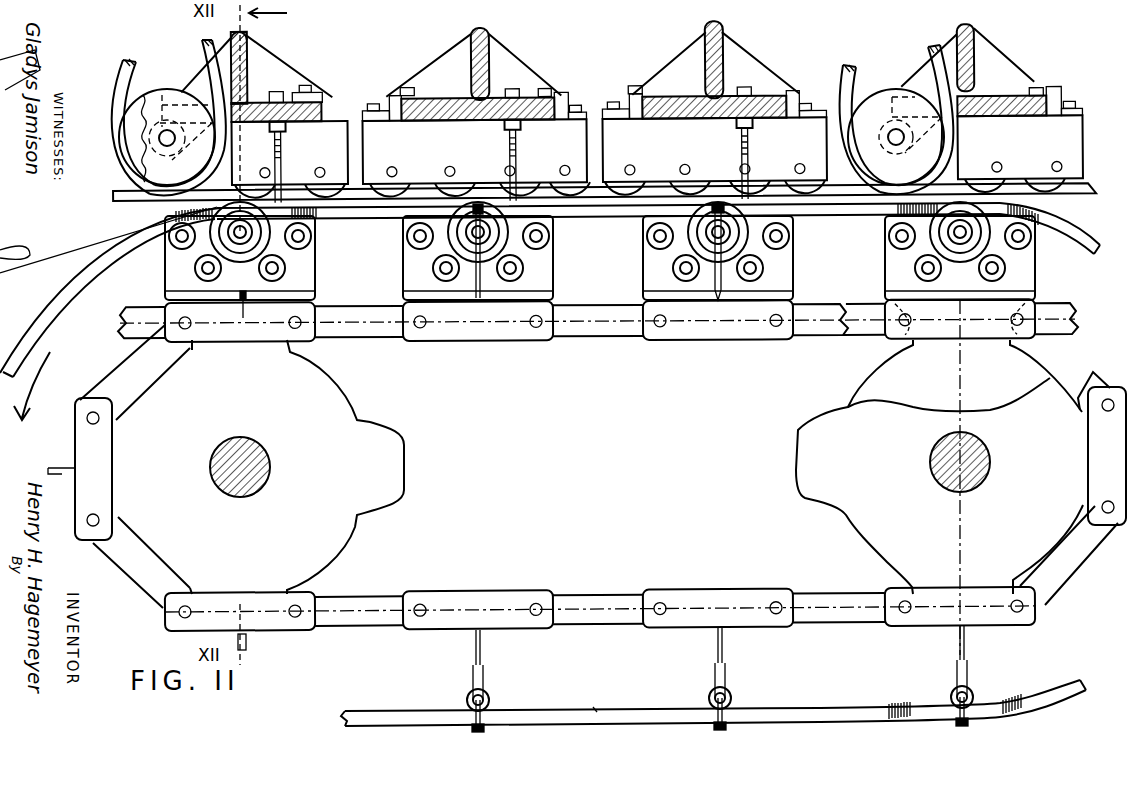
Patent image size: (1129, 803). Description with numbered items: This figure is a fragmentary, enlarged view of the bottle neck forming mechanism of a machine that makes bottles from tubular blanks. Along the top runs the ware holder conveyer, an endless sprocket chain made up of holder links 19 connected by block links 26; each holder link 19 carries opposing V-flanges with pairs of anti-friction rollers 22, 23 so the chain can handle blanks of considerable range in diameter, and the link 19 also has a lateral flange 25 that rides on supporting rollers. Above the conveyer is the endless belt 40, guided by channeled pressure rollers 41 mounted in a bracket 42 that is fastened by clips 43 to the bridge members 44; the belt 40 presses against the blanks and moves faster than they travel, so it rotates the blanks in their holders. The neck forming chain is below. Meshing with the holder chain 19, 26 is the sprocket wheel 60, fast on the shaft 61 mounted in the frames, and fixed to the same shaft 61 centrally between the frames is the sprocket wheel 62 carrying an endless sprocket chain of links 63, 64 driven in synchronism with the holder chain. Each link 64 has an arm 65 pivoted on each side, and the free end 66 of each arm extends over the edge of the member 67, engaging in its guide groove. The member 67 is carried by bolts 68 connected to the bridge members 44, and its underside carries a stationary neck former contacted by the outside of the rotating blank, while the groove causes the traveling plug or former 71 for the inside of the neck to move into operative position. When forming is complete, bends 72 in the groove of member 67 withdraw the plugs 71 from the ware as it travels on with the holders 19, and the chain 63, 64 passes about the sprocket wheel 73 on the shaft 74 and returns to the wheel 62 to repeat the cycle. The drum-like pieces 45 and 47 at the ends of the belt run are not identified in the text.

The link 19 is at (795, 291).
The anti-friction roller 22 is at (658, 247).
The anti-friction roller 23 is at (720, 300).
The lateral flange 25 is at (520, 300).
The block link 26 is at (1062, 303).
The endless belt 40 is at (126, 62).
The pressure roller 41 is at (1035, 191).
The bracket 42 is at (1083, 126).
The clip 43 is at (567, 100).
The bridge member 44 is at (707, 33).
The drum 45 is at (118, 155).
The guide bar 47 is at (183, 92).
The sprocket wheel 60 is at (870, 372).
The shaft 61 is at (930, 453).
The sprocket wheel 62 is at (799, 503).
The link 63 is at (810, 336).
The link 64 is at (775, 337).
The arm 65 is at (716, 262).
The free end 66 is at (686, 266).
The member 67 is at (597, 220).
The bolt 68 is at (513, 170).
The traveling plug 71 is at (477, 247).
The bend 72 is at (1068, 247).
The sprocket wheel 73 is at (405, 483).
The shaft 74 is at (272, 458).